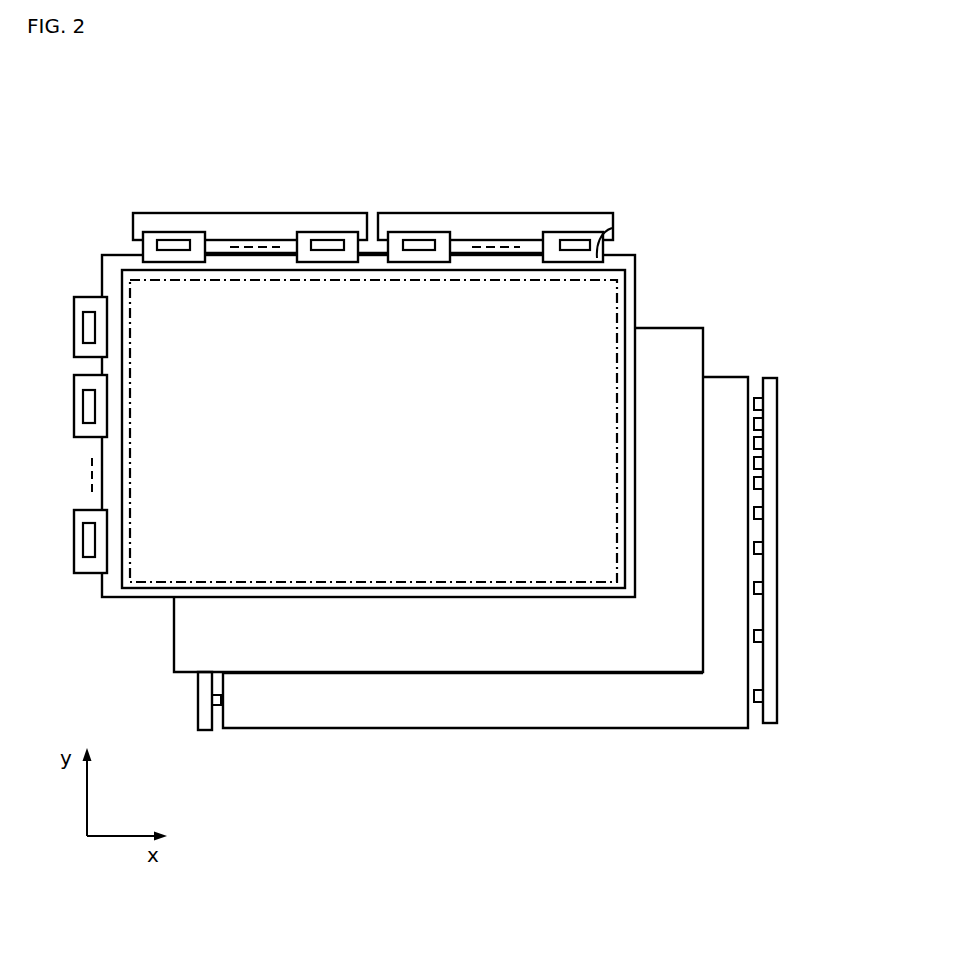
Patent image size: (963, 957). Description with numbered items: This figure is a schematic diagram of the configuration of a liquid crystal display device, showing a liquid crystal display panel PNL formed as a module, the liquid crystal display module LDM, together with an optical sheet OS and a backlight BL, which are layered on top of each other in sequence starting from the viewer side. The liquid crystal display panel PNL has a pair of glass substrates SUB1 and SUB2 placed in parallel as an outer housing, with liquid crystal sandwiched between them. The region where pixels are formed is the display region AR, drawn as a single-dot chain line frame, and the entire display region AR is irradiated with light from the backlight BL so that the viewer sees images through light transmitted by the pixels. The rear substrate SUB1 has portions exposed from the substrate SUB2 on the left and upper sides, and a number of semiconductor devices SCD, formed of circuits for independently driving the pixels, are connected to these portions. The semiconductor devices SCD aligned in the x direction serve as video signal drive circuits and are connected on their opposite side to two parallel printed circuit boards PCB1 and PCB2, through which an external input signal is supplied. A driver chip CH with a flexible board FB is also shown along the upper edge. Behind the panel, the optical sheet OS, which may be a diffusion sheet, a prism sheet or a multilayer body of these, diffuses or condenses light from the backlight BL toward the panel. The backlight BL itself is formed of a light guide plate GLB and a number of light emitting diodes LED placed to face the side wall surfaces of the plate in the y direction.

The liquid crystal display module LDM is at (230, 108).
The liquid crystal display panel PNL is at (544, 195).
The substrate SUB1 is at (113, 255).
The substrate SUB2 is at (122, 580).
The display region AR is at (373, 431).
The printed circuit board PCB1 is at (337, 213).
The printed circuit board PCB2 is at (488, 213).
The semiconductor device SCD is at (163, 233).
The driver chip CH is at (573, 242).
The flexible board FB is at (612, 228).
The optical sheet OS is at (663, 296).
The backlight BL is at (733, 340).
The light guide plate GLB is at (463, 702).
The light emitting diode LED is at (758, 636).